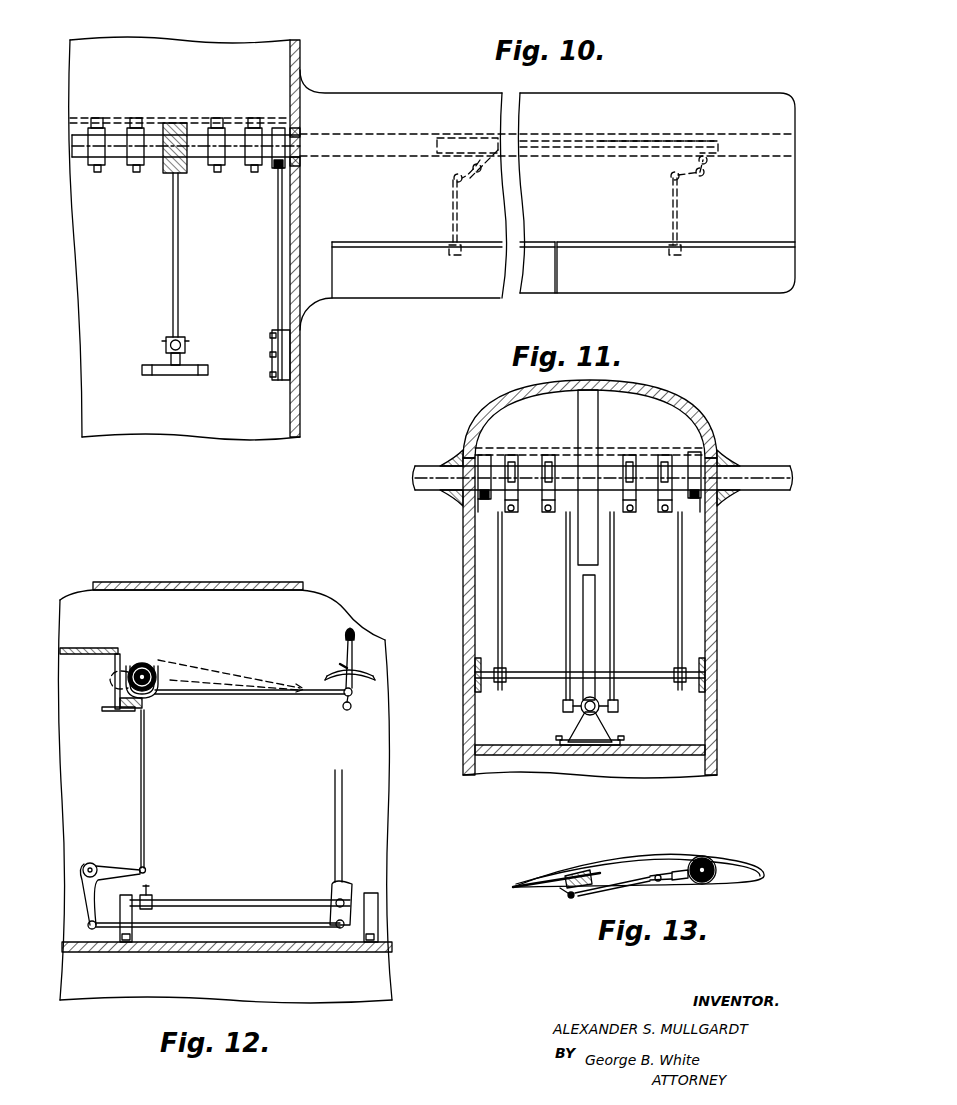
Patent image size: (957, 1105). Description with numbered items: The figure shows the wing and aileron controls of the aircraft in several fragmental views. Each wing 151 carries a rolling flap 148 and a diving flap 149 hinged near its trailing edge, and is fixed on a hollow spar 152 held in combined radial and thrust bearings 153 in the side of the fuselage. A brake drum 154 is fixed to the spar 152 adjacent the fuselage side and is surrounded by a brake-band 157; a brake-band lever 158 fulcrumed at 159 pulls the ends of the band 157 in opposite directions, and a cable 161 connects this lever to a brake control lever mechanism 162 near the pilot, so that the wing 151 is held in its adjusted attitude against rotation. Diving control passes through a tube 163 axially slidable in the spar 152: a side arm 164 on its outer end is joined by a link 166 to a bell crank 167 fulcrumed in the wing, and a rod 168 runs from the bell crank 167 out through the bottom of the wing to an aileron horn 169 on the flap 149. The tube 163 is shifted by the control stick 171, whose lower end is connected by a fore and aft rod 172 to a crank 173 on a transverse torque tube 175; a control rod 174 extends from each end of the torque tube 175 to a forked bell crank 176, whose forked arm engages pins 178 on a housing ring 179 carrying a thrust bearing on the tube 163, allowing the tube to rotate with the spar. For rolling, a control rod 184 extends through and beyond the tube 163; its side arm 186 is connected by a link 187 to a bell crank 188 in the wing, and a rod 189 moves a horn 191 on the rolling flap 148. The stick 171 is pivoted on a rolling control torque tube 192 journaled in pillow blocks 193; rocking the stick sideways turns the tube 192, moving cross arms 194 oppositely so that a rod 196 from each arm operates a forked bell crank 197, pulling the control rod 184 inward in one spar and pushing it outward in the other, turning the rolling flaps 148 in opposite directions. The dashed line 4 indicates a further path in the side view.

In FIG. 12, the hidden-line path of slat 4 is at (210, 668).
In FIG. 10, the rolling flap 148 is at (740, 293).
In FIG. 10, the diving flap 149 is at (408, 295).
In FIG. 13, the diving flap 149 is at (545, 877).
In FIG. 10, the wing 151 is at (392, 100).
In FIG. 11, the wing 151 is at (782, 466).
In FIG. 13, the wing 151 is at (656, 858).
In FIG. 10, the hollow spar 152 is at (236, 130).
In FIG. 11, the hollow spar 152 is at (440, 482).
In FIG. 12, the hollow spar 152 is at (148, 664).
In FIG. 13, the hollow spar 152 is at (706, 858).
In FIG. 10, the combined radial and thrust bearing 153 is at (302, 134).
In FIG. 11, the combined radial and thrust bearing 153 is at (722, 498).
In FIG. 10, the brake drum 154 is at (268, 130).
In FIG. 11, the brake drum 154 is at (488, 462).
In FIG. 10, the brake-band 157 is at (276, 168).
In FIG. 11, the brake-band 157 is at (487, 455).
In FIG. 12, the brake-band lever 158 is at (352, 640).
In FIG. 12, the fulcrum 159 is at (347, 710).
In FIG. 10, the cable 161 is at (278, 262).
In FIG. 11, the cable 161 is at (478, 512).
In FIG. 12, the cable 161 is at (264, 695).
In FIG. 10, the brake control lever mechanism 162 is at (270, 366).
In FIG. 12, the brake control lever mechanism 162 is at (340, 665).
In FIG. 10, the control tube 163 is at (445, 137).
In FIG. 12, the control tube 163 is at (134, 662).
In FIG. 13, the control tube 163 is at (716, 862).
In FIG. 10, the side arm 164 is at (500, 158).
In FIG. 13, the side arm 164 is at (686, 880).
In FIG. 10, the link 166 is at (490, 170).
In FIG. 10, the bell crank 167 is at (455, 176).
In FIG. 13, the bell crank 167 is at (664, 882).
In FIG. 10, the rod 168 is at (452, 202).
In FIG. 13, the rod 168 is at (600, 890).
In FIG. 10, the aileron horn 169 is at (460, 254).
In FIG. 13, the aileron horn 169 is at (565, 893).
In FIG. 10, the control stick 171 is at (183, 342).
In FIG. 11, the control stick 171 is at (596, 598).
In FIG. 12, the control stick 171 is at (335, 810).
In FIG. 12, the fore and aft rod 172 is at (242, 926).
In FIG. 12, the crank 173 is at (86, 898).
In FIG. 11, the control rod 174 is at (503, 620).
In FIG. 12, the control rod 174 is at (145, 810).
In FIG. 11, the transverse torque tube 175 is at (638, 672).
In FIG. 12, the transverse torque tube 175 is at (90, 864).
In FIG. 10, the forked bell crank 176 is at (88, 160).
In FIG. 11, the forked bell crank 176 is at (511, 512).
In FIG. 12, the forked bell crank 176 is at (152, 698).
In FIG. 11, the pins 178 is at (664, 460).
In FIG. 12, the pins 178 is at (128, 676).
In FIG. 10, the housing ring 179 is at (132, 128).
In FIG. 11, the housing ring 179 is at (548, 460).
In FIG. 10, the control rod 184 is at (666, 140).
In FIG. 12, the control rod 184 is at (165, 680).
In FIG. 10, the side arm 186 is at (712, 156).
In FIG. 10, the link 187 is at (706, 172).
In FIG. 10, the bell crank 188 is at (690, 180).
In FIG. 10, the rod 189 is at (678, 205).
In FIG. 10, the horn 191 is at (683, 252).
In FIG. 10, the rolling control torque tube 192 is at (180, 260).
In FIG. 11, the rolling control torque tube 192 is at (600, 712).
In FIG. 12, the rolling control torque tube 192 is at (300, 900).
In FIG. 10, the pillow blocks 193 is at (184, 372).
In FIG. 11, the pillow blocks 193 is at (602, 742).
In FIG. 12, the pillow blocks 193 is at (378, 916).
In FIG. 11, the cross arms 194 is at (563, 712).
In FIG. 12, the cross arms 194 is at (152, 898).
In FIG. 11, the rod 196 is at (608, 548).
In FIG. 10, the forked bell crank 197 is at (136, 168).
In FIG. 11, the forked bell crank 197 is at (549, 512).